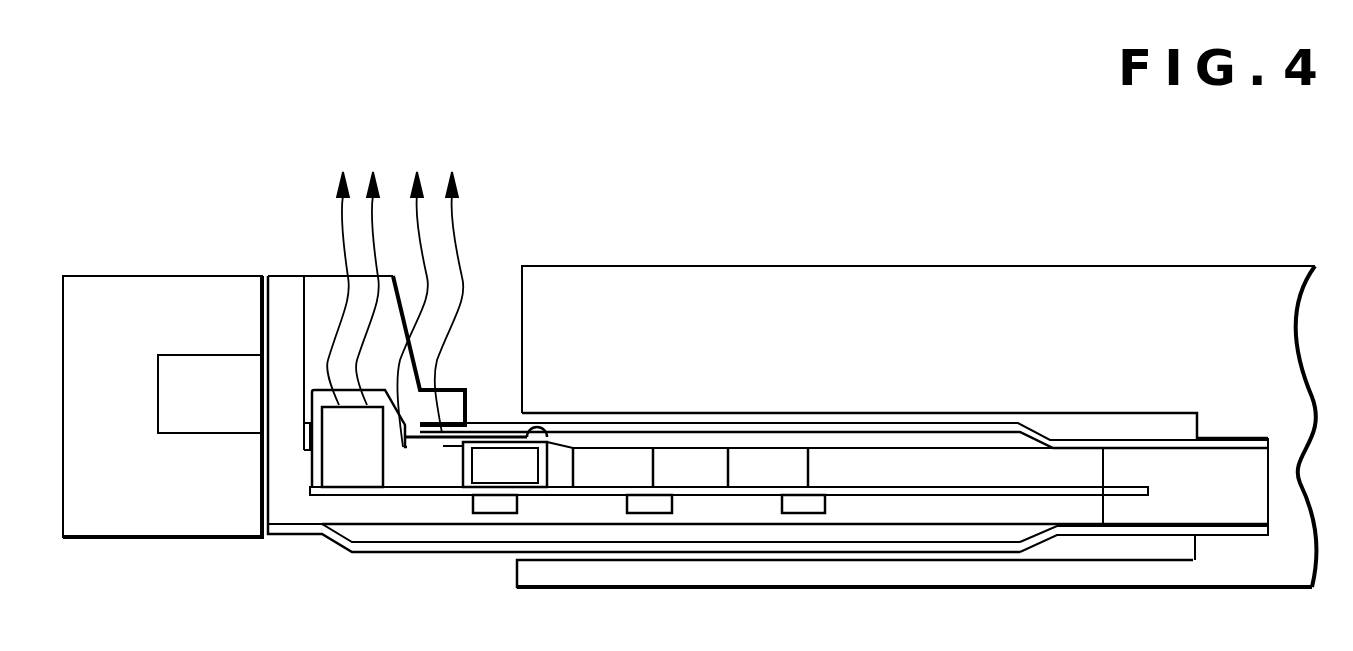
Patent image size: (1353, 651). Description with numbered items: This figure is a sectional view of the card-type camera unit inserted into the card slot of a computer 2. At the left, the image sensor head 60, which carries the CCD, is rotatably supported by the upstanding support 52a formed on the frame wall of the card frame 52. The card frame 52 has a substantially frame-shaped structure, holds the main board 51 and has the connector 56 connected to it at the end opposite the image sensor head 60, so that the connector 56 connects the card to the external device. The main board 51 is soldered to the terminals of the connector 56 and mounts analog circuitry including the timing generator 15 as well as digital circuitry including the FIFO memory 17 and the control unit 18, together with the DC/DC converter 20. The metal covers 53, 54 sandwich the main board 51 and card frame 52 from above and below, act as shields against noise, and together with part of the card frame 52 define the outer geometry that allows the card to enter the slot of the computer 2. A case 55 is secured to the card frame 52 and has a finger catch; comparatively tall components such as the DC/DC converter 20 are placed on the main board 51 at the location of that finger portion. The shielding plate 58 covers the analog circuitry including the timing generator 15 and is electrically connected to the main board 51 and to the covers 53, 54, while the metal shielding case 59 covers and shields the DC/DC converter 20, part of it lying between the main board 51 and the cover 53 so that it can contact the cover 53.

The computer 2 is at (577, 283).
The timing generator 15 is at (497, 463).
The FIFO memory 17 is at (615, 455).
The control unit 18 is at (770, 460).
The DC/DC converter 20 is at (362, 470).
The main board 51 is at (1070, 480).
The card frame 52 is at (292, 505).
The upstanding support 52a is at (185, 357).
The cover 53 is at (910, 425).
The cover 54 is at (965, 556).
The case 55 is at (325, 277).
The connector 56 is at (1205, 462).
The shielding plate 58 is at (527, 437).
The shielding case 59 is at (340, 405).
The image sensor head 60 is at (215, 520).